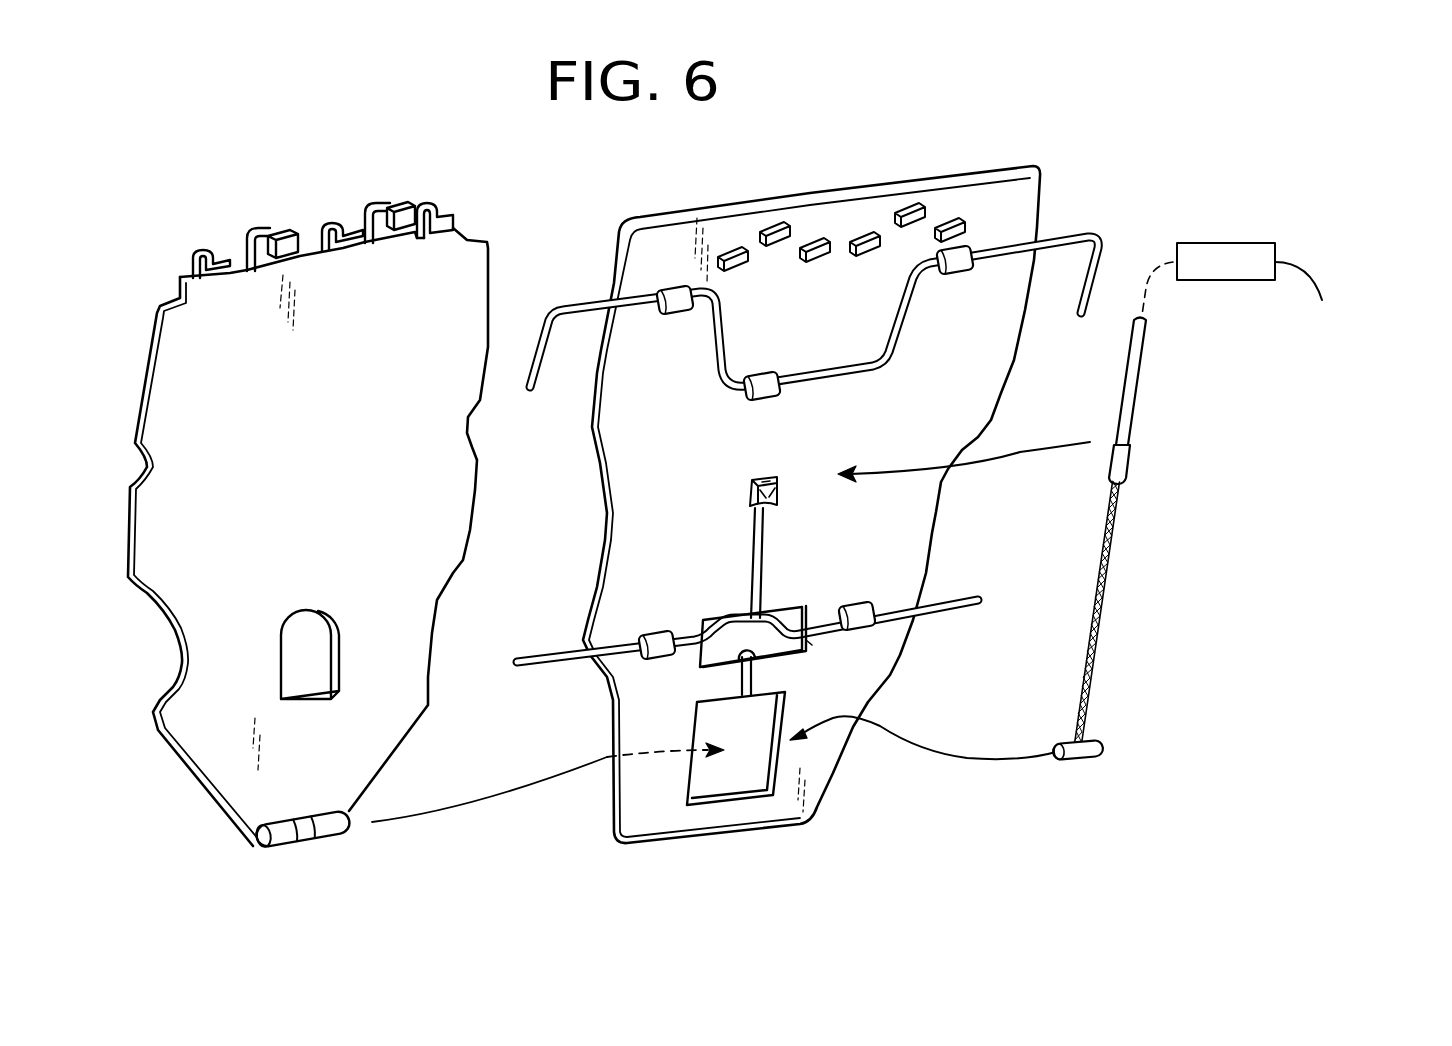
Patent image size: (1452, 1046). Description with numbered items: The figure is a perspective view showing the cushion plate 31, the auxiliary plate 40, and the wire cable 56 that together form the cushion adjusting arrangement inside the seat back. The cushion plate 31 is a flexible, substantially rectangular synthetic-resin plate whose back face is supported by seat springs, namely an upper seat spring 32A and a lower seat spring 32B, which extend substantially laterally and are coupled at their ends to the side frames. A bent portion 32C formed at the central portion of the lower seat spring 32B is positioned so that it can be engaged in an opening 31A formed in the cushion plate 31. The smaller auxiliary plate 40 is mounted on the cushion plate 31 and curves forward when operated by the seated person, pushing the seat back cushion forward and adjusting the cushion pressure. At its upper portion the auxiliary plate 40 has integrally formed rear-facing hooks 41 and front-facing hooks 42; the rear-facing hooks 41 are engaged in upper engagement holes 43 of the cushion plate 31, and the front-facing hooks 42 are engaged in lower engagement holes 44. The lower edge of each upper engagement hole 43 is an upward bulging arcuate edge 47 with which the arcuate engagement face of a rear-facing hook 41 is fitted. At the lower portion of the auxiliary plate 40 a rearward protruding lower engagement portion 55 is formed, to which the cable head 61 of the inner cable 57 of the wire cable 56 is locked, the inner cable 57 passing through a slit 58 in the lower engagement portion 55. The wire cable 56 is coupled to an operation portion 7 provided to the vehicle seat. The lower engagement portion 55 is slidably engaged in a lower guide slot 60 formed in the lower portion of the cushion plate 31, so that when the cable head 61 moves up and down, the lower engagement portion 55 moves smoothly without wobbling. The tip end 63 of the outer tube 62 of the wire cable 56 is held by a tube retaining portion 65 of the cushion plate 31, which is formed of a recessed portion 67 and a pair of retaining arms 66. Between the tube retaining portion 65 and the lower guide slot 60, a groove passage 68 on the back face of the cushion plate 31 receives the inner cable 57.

The operation portion 7 is at (1247, 243).
The cushion plate 31 is at (600, 465).
The opening 31A is at (810, 641).
The upper seat spring 32A is at (1068, 246).
The lower seat spring 32B is at (950, 598).
The bent portion 32C is at (735, 628).
The auxiliary plate 40 is at (489, 246).
The rear-facing hooks 41 is at (268, 228).
The front-facing hooks 42 is at (205, 250).
The upper engagement holes 43 is at (776, 226).
The lower engagement holes 44 is at (962, 228).
The arcuate edge 47 is at (777, 250).
The lower engagement portion 55 is at (322, 822).
The wire cable 56 is at (1138, 533).
The inner cable 57 is at (1096, 640).
The slit 58 is at (325, 838).
The lower guide slot 60 is at (772, 702).
The cable head 61 is at (1095, 751).
The outer tube 62 is at (1140, 380).
The tip end 63 is at (1127, 460).
The tube retaining portion 65 is at (778, 500).
The retaining arms 66 is at (777, 490).
The recessed portion 67 is at (757, 484).
The groove passage 68 is at (763, 582).